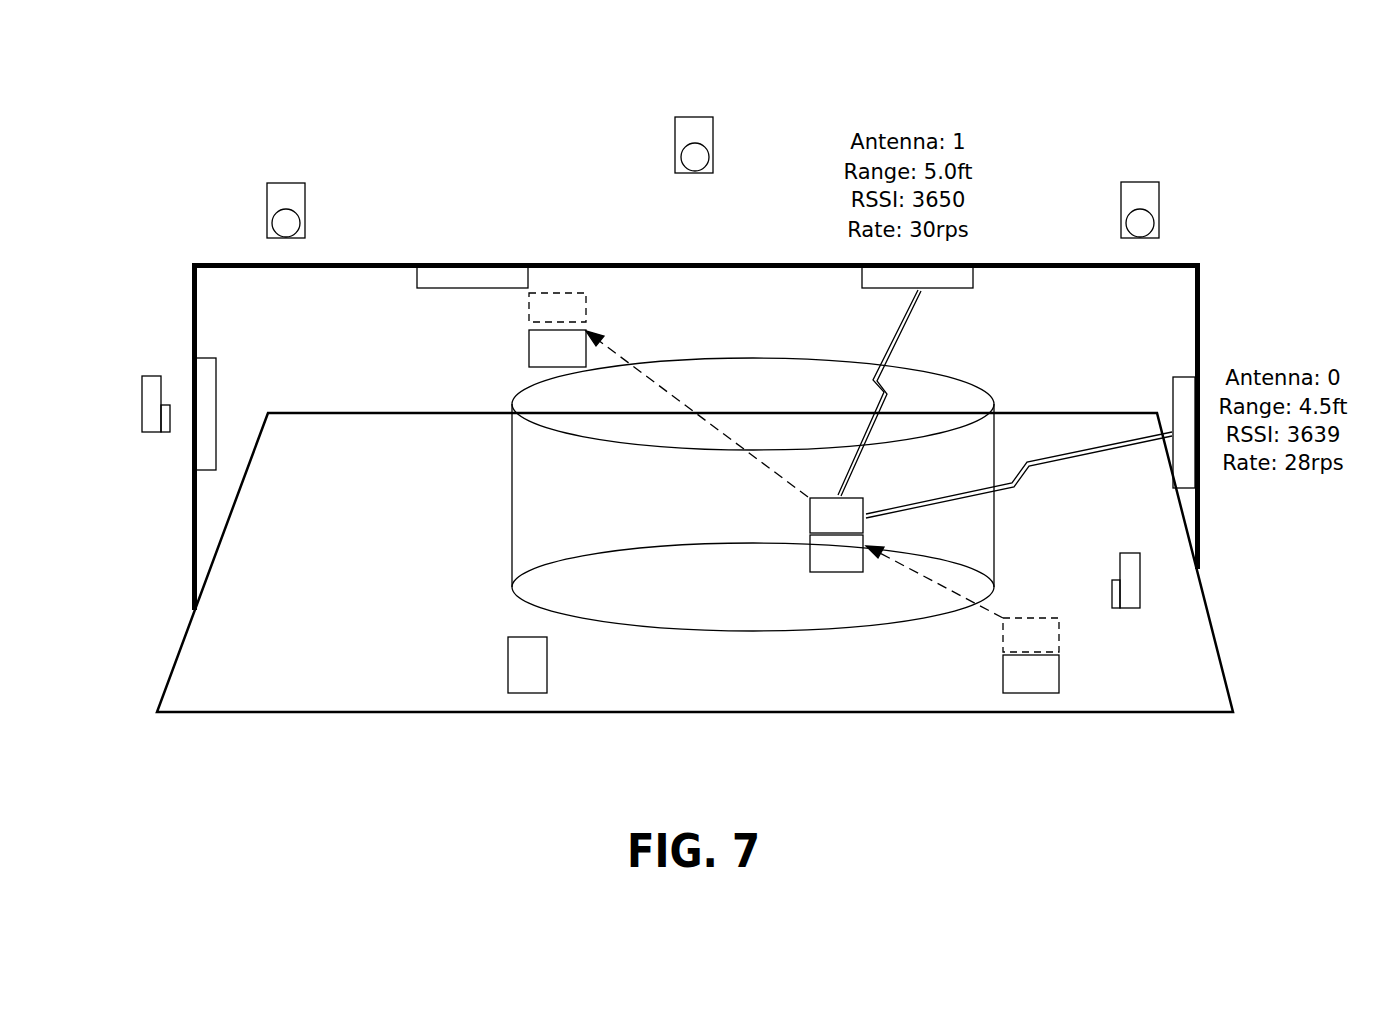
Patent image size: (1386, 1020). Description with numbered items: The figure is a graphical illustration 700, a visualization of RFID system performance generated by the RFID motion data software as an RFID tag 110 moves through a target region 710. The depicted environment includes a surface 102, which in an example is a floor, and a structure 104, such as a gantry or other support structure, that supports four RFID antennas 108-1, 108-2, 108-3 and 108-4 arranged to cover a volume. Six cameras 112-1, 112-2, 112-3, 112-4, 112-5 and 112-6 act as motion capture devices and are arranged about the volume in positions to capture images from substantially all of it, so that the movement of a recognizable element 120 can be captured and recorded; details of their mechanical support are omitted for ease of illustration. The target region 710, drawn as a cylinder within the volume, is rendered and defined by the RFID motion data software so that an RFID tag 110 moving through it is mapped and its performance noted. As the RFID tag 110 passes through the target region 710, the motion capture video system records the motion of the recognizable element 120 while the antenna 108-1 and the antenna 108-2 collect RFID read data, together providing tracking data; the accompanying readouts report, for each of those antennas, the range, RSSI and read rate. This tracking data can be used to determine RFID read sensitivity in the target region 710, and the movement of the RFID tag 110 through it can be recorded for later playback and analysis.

The graphical illustration 700 is at (142, 60).
The surface 102 is at (242, 693).
The structure 104 is at (192, 517).
The RFID antenna 108-1 is at (1180, 377).
The RFID antenna 108-2 is at (973, 272).
The RFID antenna 108-3 is at (417, 278).
The RFID antenna 108-4 is at (196, 358).
The RFID tag 110 is at (587, 312).
The recognizable element 120 is at (528, 350).
The camera 112-1 is at (508, 665).
The camera 112-2 is at (142, 405).
The camera 112-3 is at (286, 183).
The camera 112-4 is at (695, 117).
The camera 112-5 is at (1140, 182).
The camera 112-6 is at (1140, 583).
The target region 710 is at (605, 490).